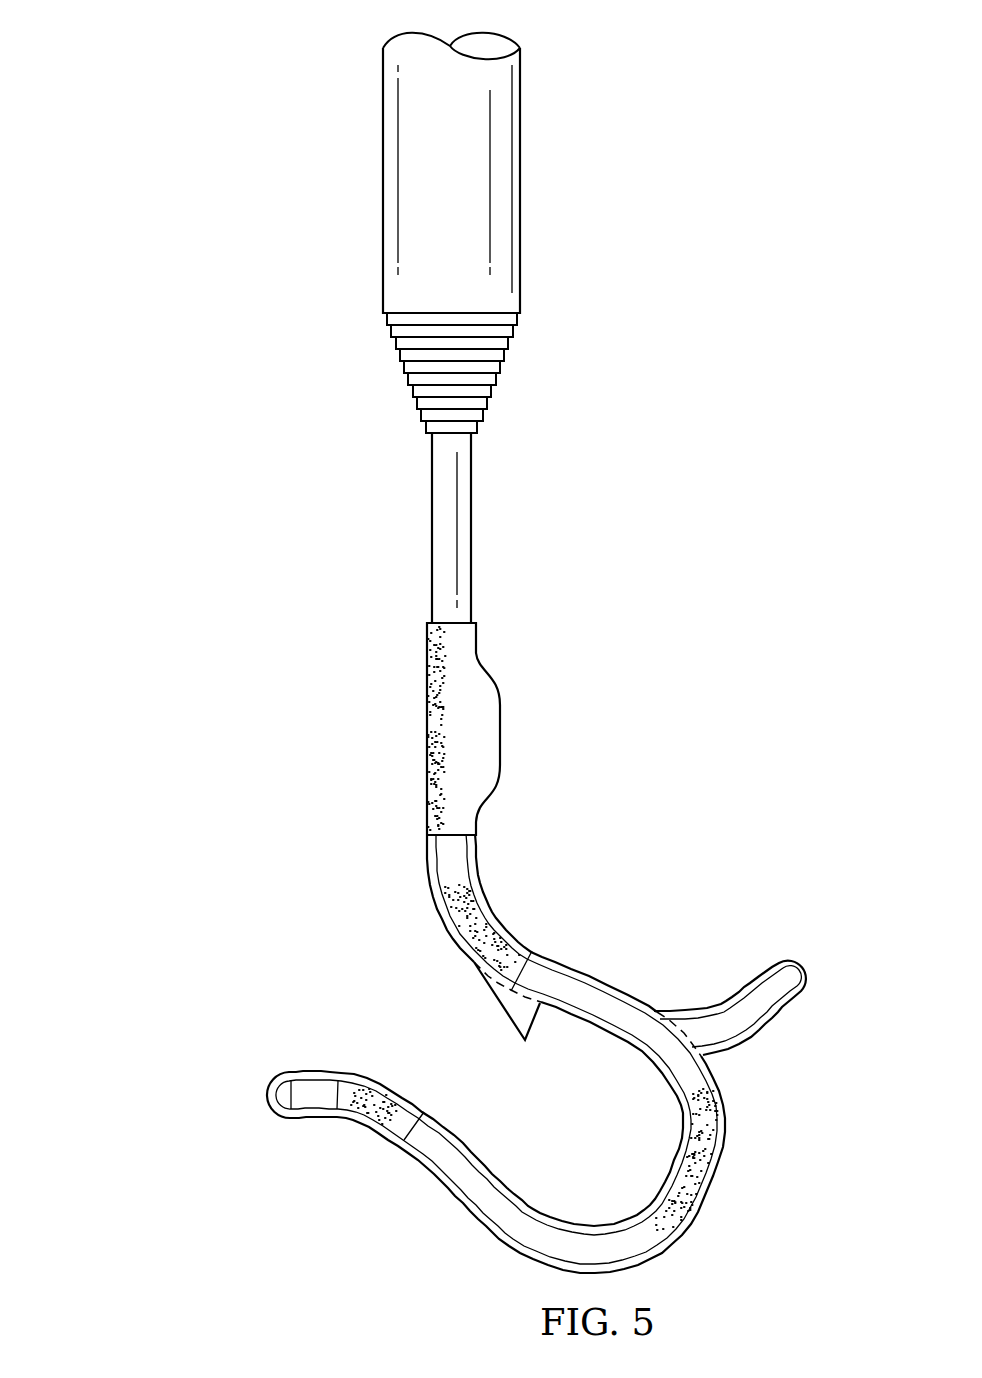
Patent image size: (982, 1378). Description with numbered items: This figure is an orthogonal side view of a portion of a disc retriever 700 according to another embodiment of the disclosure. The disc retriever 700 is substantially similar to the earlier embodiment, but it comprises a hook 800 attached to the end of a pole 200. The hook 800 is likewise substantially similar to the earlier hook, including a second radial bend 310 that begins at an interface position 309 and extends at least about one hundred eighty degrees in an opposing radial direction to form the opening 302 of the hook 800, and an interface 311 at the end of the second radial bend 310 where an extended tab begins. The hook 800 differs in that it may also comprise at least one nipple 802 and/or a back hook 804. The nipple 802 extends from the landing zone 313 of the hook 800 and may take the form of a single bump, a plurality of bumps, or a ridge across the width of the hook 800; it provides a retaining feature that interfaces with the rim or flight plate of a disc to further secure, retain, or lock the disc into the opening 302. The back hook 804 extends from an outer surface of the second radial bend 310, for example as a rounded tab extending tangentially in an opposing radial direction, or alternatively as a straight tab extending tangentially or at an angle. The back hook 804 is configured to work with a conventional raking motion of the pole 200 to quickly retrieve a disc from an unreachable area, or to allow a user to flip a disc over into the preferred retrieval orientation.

The disc retriever 700 is at (157, 356).
The pole 200 is at (383, 180).
The opening 302 is at (383, 993).
The interface position 309 is at (537, 968).
The nipple 802 is at (491, 984).
The back hook 804 is at (783, 960).
The landing zone 313 is at (622, 1046).
The second radial bend 310 is at (727, 1138).
The hook 800 is at (713, 1199).
The interface 311 is at (417, 1130).